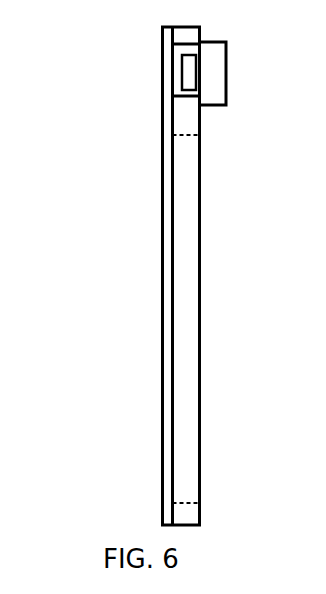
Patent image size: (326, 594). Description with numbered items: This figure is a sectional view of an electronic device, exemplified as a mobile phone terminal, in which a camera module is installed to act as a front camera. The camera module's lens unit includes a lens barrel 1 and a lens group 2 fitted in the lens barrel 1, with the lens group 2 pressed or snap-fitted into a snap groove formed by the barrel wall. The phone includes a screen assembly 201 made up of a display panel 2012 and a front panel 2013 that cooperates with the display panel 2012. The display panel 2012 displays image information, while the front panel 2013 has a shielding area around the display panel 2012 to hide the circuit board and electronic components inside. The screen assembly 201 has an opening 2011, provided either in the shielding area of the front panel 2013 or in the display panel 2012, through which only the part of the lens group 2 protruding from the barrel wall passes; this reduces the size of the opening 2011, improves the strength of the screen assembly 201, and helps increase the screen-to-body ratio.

The lens barrel 1 is at (152, 276).
The lens group 2 is at (195, 80).
The screen assembly 201 is at (118, 276).
The opening 2011 is at (142, 102).
The front panel 2013 is at (163, 170).
The display panel 2012 is at (185, 262).